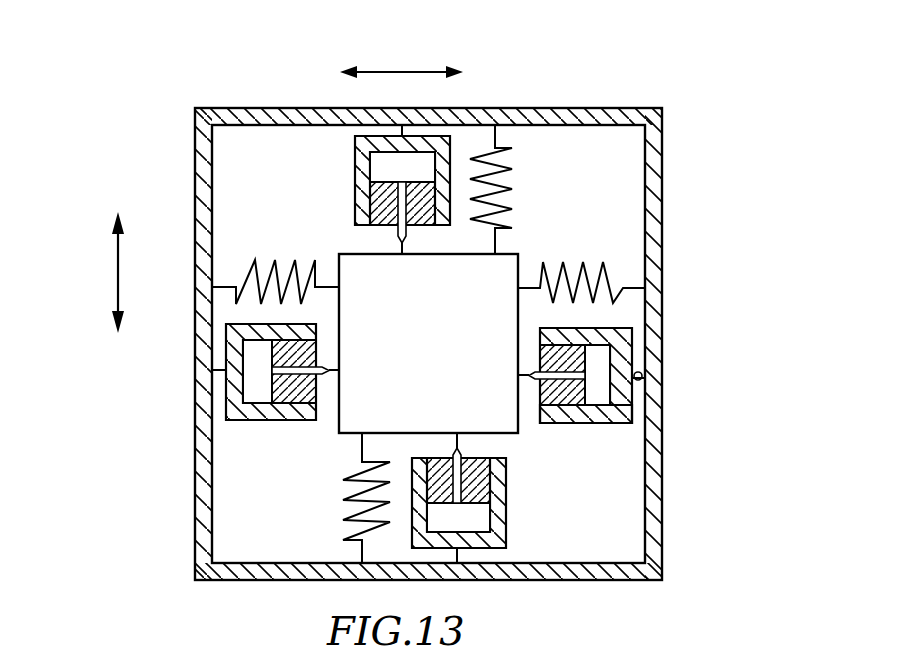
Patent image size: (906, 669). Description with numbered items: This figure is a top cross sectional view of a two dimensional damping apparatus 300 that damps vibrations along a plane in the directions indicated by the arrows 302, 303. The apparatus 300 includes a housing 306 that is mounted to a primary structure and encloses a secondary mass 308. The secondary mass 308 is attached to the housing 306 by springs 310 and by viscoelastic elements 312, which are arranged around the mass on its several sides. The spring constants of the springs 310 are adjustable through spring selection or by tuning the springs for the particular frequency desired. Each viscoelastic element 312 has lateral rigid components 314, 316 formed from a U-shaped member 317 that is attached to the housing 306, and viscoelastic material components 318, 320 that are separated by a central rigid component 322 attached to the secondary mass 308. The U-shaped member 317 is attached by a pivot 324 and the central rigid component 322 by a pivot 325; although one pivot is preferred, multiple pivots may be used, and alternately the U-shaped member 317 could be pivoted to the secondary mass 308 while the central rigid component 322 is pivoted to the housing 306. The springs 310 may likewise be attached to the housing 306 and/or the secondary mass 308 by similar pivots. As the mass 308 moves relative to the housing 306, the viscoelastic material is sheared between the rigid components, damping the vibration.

The two dimensional damping apparatus 300 is at (259, 52).
The arrow 302 is at (413, 72).
The arrow 303 is at (117, 250).
The housing 306 is at (662, 150).
The secondary mass 308 is at (411, 323).
The springs 310 is at (505, 187).
The viscoelastic elements 312 is at (350, 188).
The lateral rigid component 314 is at (622, 328).
The lateral rigid component 316 is at (648, 449).
The U-shaped member 317 is at (633, 345).
The viscoelastic material component 318 is at (543, 348).
The viscoelastic material component 320 is at (590, 398).
The central rigid component 322 is at (643, 443).
The pivot 324 is at (638, 382).
The pivot 325 is at (525, 382).